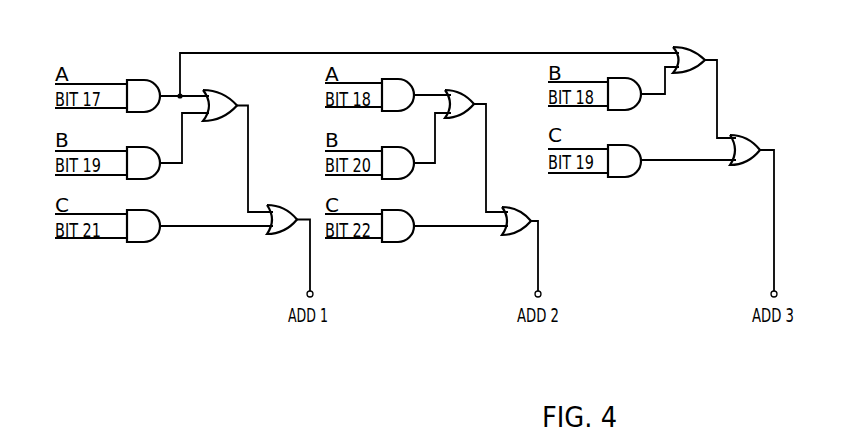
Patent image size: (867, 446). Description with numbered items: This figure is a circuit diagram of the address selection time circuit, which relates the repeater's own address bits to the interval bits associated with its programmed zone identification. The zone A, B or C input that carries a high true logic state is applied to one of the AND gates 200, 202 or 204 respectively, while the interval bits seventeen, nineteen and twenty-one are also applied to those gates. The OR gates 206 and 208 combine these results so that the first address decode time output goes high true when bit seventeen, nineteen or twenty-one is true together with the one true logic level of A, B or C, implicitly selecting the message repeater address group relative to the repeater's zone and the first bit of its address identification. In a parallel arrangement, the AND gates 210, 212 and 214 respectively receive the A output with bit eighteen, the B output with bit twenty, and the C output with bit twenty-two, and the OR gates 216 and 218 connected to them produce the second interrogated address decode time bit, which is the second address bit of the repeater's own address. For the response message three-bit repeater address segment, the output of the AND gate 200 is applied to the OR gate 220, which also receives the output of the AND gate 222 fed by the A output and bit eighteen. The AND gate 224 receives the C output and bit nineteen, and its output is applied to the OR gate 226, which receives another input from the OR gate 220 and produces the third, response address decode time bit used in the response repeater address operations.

The AND gate 200 is at (146, 80).
The AND gate 202 is at (146, 147).
The AND gate 204 is at (157, 213).
The OR gate 206 is at (229, 95).
The OR gate 208 is at (280, 234).
The AND gate 210 is at (396, 80).
The AND gate 212 is at (392, 147).
The AND gate 214 is at (407, 212).
The OR gate 216 is at (466, 90).
The OR gate 218 is at (518, 212).
The OR gate 220 is at (695, 47).
The AND gate 222 is at (644, 102).
The AND gate 224 is at (642, 152).
The OR gate 226 is at (741, 135).